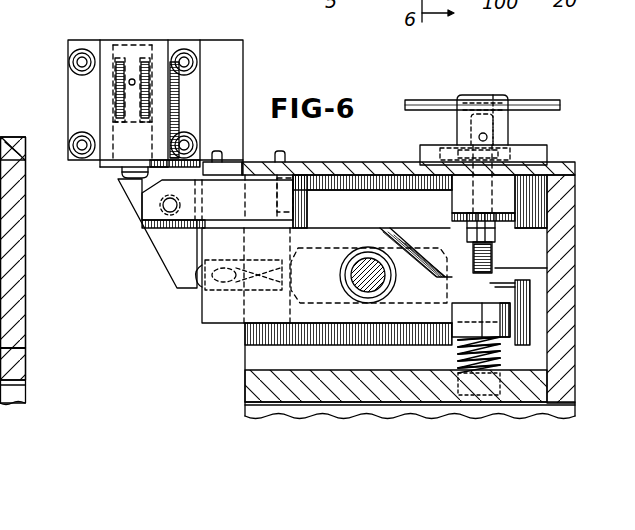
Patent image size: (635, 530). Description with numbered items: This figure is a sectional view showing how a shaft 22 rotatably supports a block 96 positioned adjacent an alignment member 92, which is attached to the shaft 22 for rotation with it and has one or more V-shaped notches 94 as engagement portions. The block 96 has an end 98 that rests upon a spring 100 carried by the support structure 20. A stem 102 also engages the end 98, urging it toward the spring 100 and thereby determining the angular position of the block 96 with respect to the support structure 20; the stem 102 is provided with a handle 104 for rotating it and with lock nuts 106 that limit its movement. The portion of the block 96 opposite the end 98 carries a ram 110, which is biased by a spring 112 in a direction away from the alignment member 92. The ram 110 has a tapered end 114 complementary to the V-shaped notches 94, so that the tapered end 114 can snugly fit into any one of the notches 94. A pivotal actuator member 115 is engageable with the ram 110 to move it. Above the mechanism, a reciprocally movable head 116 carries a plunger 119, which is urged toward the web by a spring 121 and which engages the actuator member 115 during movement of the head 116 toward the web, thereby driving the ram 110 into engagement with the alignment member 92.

The support structure 20 is at (26, 290).
The shaft 22 is at (368, 272).
The alignment member 92 is at (423, 252).
The V-shaped notches 94 is at (440, 277).
The block 96 is at (329, 242).
The end 98 is at (490, 300).
The spring 100 is at (456, 355).
The stem 102 is at (495, 268).
The handle 104 is at (433, 100).
The lock nuts 106 is at (496, 236).
The ram 110 is at (275, 261).
The spring 112 is at (250, 291).
The tapered end 114 is at (369, 277).
The pivotal actuator member 115 is at (158, 239).
The head 116 is at (68, 72).
The plunger 119 is at (122, 174).
The spring 121 is at (113, 101).